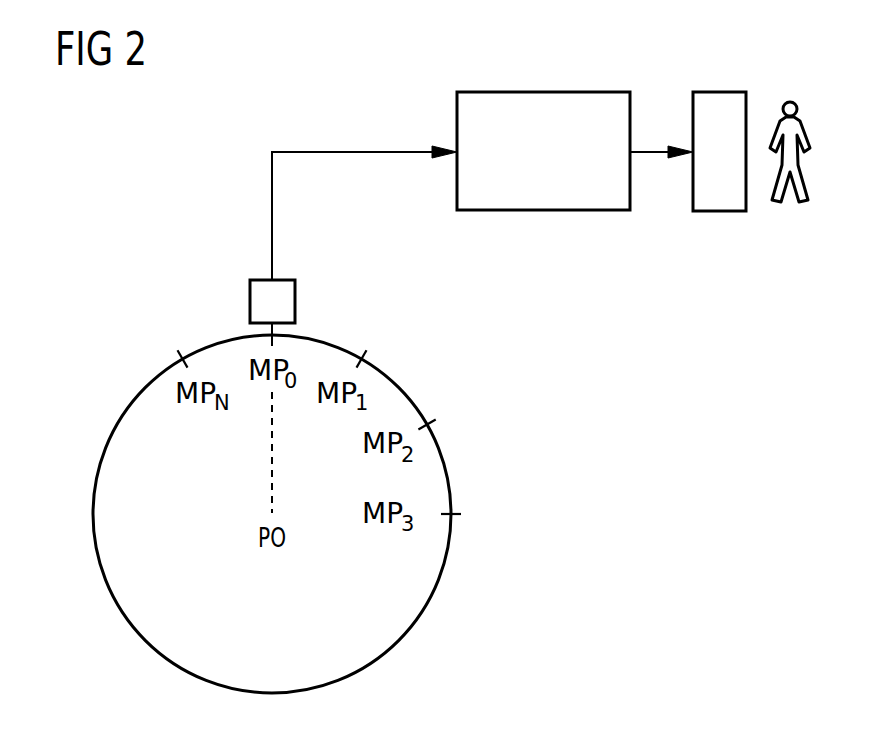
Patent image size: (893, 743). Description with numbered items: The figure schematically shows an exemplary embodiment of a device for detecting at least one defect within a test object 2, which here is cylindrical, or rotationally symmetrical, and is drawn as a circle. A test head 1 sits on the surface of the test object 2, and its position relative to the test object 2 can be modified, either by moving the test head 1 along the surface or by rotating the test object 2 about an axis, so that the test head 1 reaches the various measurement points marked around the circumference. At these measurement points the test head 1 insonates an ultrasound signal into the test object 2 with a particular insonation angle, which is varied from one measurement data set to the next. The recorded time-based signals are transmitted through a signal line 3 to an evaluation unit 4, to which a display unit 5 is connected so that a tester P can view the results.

The test head 1 is at (295, 301).
The test object 2 is at (100, 514).
The signal line 3 is at (272, 213).
The evaluation unit 4 is at (543, 92).
The display unit 5 is at (718, 92).
The tester P is at (792, 101).